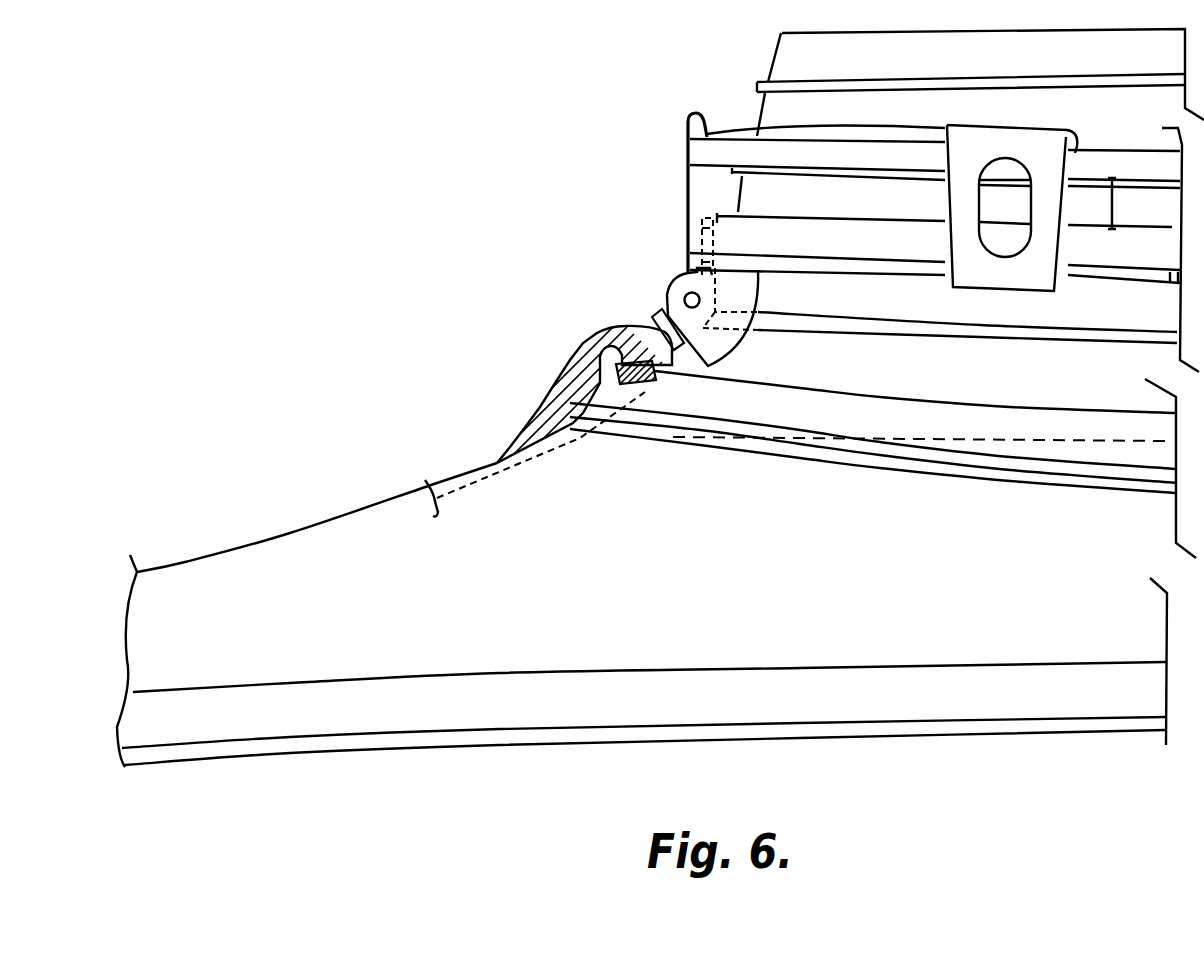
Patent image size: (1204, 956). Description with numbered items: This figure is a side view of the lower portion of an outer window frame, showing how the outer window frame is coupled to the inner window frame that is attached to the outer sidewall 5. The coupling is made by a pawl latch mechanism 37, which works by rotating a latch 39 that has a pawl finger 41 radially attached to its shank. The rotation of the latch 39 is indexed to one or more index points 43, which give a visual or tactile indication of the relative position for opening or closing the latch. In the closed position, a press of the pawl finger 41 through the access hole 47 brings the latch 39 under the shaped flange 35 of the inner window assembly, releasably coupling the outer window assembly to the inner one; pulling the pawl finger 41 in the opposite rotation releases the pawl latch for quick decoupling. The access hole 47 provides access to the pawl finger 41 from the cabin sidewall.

The outer sidewall 5 is at (800, 688).
The shaped flange 35 is at (556, 399).
The pawl latch mechanism 37 is at (616, 304).
The latch 39 is at (656, 320).
The pawl finger 41 is at (690, 230).
The index points 43 is at (623, 380).
The access hole 47 is at (716, 233).